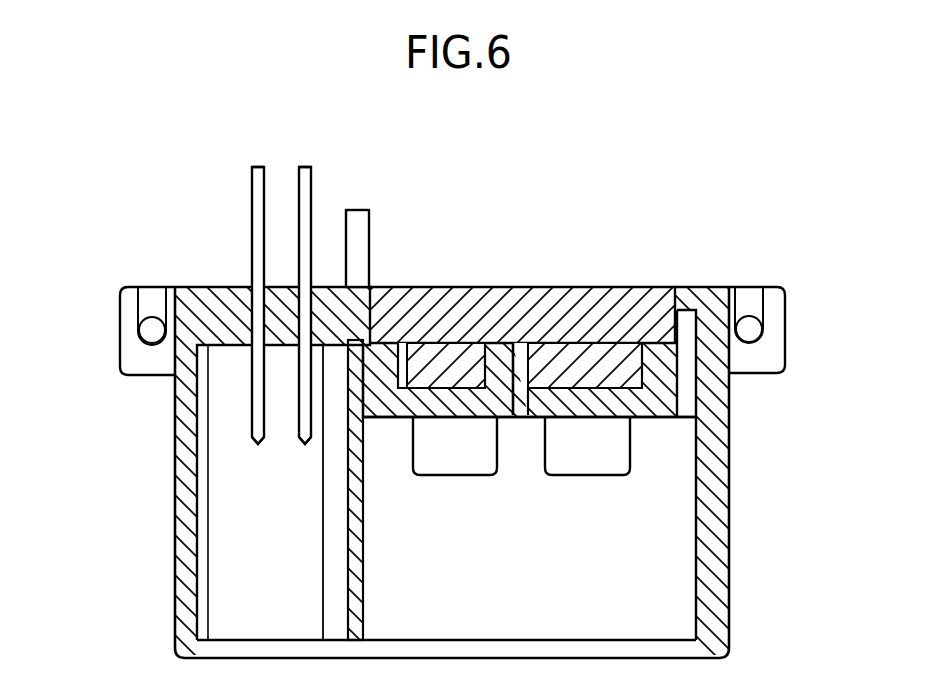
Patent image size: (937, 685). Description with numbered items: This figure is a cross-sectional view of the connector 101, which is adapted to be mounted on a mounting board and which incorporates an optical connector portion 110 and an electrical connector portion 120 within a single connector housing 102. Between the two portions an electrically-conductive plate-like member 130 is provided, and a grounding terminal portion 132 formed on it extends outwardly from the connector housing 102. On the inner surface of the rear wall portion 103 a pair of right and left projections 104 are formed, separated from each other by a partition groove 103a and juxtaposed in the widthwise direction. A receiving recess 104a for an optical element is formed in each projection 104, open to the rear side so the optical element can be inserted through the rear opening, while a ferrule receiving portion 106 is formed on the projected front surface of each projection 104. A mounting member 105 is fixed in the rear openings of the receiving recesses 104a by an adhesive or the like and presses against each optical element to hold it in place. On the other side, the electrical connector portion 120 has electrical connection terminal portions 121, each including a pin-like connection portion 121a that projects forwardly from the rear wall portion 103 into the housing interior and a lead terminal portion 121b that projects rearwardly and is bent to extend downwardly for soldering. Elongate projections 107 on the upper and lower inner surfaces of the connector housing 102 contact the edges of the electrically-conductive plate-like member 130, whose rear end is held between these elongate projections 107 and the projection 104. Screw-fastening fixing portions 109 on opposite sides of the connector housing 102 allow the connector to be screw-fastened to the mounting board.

The connector 101 is at (443, 251).
The connector housing 102 is at (174, 466).
The rear wall portion 103 is at (700, 286).
The partition groove 103a is at (516, 380).
The projection 104 is at (386, 420).
The receiving recess 104a is at (400, 385).
The mounting member 105 is at (588, 286).
The ferrule receiving portion 106 is at (443, 466).
The elongate projection 107 is at (322, 572).
The screw-fastening fixing portion 109 is at (119, 328).
The optical connector portion 110 is at (478, 286).
The electrical connector portion 120 is at (210, 286).
The electrical connection terminal portion 121 is at (300, 421).
The connection portion 121a is at (305, 446).
The lead terminal portion 121b is at (302, 166).
The electrically-conductive plate-like member 130 is at (364, 566).
The grounding terminal portion 132 is at (356, 209).